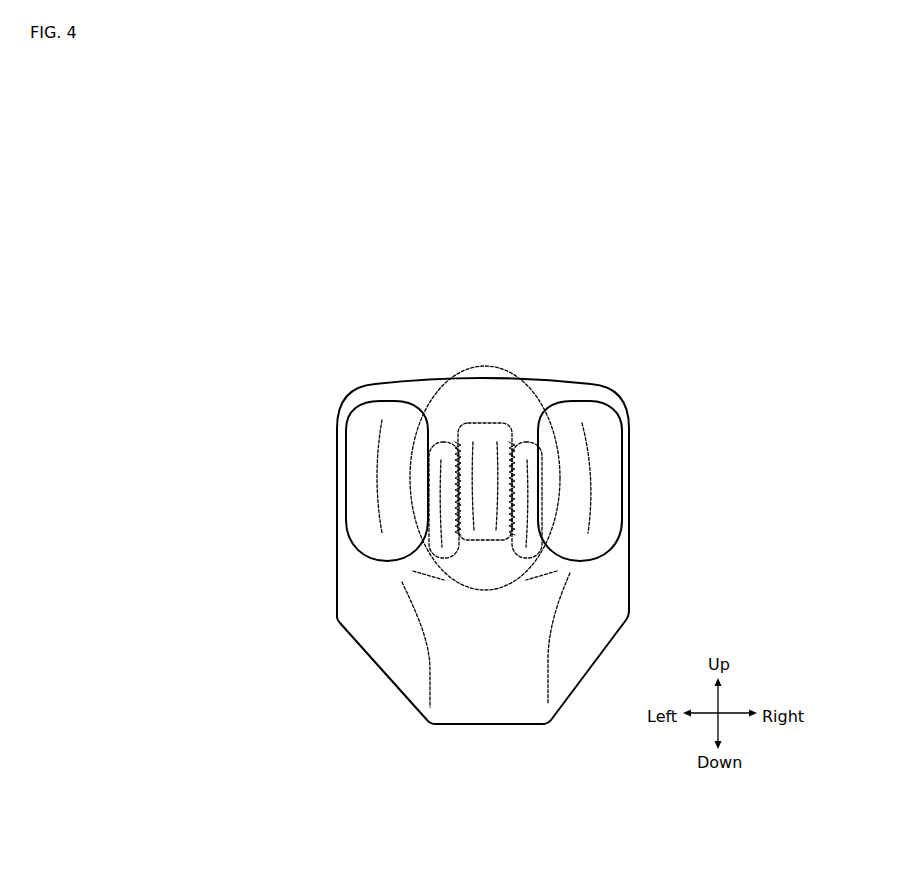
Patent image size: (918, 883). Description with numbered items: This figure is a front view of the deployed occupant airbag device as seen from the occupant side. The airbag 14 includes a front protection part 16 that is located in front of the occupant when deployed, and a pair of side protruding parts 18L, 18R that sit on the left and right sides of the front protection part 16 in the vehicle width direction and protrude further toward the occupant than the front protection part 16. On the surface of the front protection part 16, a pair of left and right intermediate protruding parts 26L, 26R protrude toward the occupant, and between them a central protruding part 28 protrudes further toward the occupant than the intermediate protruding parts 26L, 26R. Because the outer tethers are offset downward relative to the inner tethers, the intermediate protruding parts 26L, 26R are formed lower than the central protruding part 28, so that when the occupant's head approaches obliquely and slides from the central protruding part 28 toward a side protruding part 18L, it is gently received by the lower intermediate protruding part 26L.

The airbag 14 is at (347, 388).
The front protection part 16 is at (440, 577).
The left side protruding part 18L is at (352, 482).
The right side protruding part 18R is at (612, 430).
The left intermediate protruding part 26L is at (445, 441).
The right intermediate protruding part 26R is at (530, 437).
The central protruding part 28 is at (488, 422).